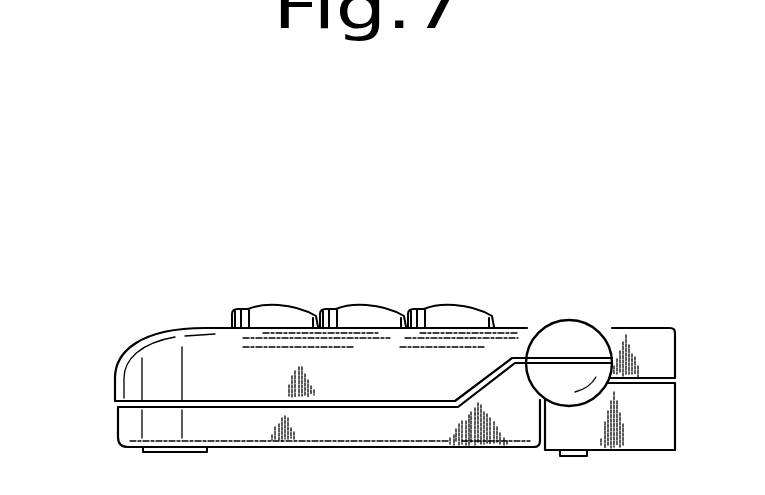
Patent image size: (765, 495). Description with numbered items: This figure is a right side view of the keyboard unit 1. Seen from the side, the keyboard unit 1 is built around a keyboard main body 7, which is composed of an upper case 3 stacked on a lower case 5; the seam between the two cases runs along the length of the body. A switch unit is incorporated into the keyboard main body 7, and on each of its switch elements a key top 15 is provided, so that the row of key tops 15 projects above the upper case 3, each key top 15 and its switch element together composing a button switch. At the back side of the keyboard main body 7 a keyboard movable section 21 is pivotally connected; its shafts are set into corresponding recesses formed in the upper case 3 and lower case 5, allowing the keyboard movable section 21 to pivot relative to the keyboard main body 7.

The keyboard unit 1 is at (398, 246).
The upper case 3 is at (140, 383).
The lower case 5 is at (143, 430).
The keyboard main body 7 is at (73, 368).
The key top 15 is at (455, 318).
The keyboard movable section 21 is at (637, 360).